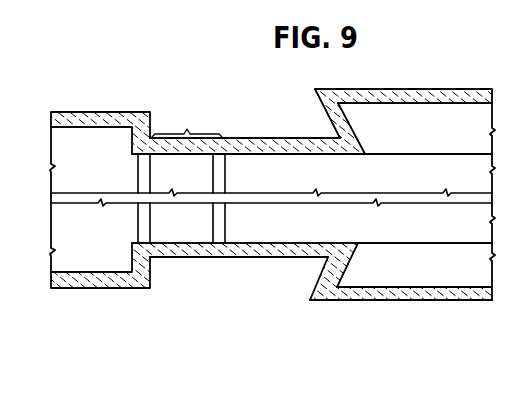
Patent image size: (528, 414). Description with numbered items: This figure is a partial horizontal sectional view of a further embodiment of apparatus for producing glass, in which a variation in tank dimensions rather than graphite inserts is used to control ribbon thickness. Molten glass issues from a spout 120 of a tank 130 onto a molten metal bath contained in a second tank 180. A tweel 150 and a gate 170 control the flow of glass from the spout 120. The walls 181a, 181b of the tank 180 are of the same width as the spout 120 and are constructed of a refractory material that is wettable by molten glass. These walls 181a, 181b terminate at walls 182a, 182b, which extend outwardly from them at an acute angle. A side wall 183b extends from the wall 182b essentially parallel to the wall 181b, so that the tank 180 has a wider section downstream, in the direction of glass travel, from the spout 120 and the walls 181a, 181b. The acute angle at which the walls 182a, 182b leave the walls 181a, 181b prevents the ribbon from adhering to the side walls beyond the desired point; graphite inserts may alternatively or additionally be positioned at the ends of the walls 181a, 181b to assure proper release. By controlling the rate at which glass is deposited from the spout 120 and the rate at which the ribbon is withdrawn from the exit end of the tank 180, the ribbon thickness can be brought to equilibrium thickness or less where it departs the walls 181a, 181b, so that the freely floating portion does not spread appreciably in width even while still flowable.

The tank 130 is at (112, 112).
The spout 120 is at (187, 129).
The tweel 150 is at (137, 183).
The gate 170 is at (216, 217).
The tank 180 is at (371, 89).
The wall 181a is at (241, 138).
The wall 181b is at (254, 258).
The wall 182a is at (327, 113).
The wall 182b is at (317, 282).
The side wall 183b is at (404, 301).